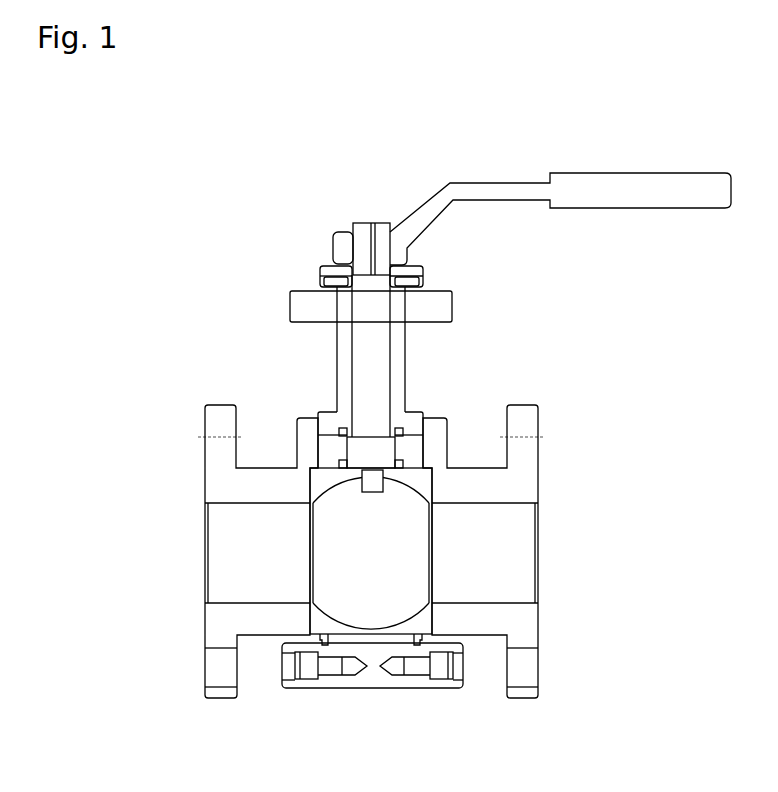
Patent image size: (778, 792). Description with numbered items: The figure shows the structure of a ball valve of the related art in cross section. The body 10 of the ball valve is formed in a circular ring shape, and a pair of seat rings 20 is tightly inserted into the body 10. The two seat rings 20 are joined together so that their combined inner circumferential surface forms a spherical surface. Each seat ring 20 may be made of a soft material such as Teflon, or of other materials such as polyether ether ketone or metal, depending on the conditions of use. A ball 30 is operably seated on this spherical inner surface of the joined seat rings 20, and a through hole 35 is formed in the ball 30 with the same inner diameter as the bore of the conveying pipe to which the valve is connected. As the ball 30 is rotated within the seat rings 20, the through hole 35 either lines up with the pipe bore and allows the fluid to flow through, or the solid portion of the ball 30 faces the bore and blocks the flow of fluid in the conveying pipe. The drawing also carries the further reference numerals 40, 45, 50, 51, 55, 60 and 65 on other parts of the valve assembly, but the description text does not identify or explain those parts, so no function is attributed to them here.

The body 10 is at (375, 660).
The seat ring 20 is at (300, 665).
The ball 30 is at (340, 660).
The through hole 35 is at (425, 553).
The valve body 40 is at (222, 548).
The flange 45 is at (540, 426).
The stem 50 is at (374, 410).
The stem collar 51 is at (396, 437).
The handle 55 is at (440, 197).
The bonnet flange 60 is at (438, 308).
The gland 65 is at (330, 276).